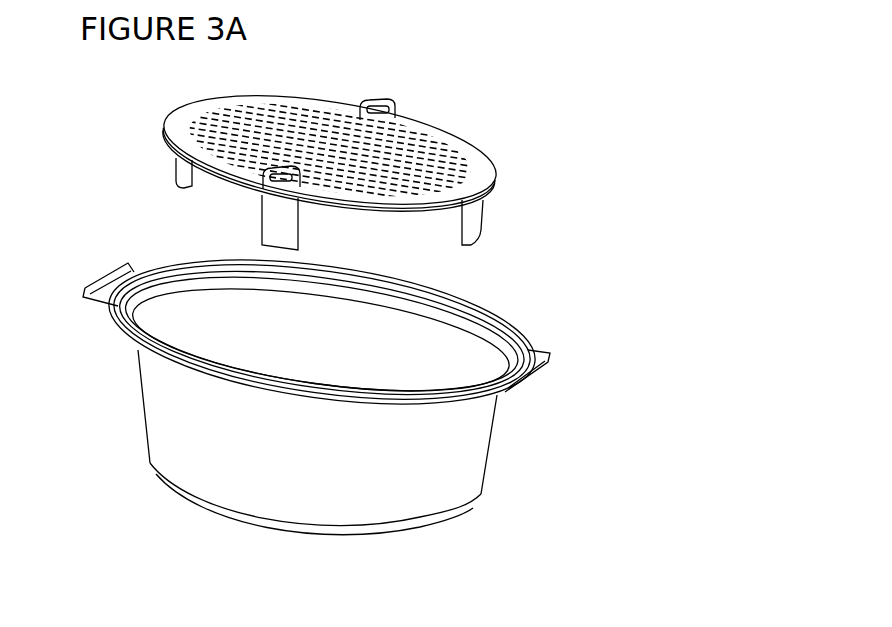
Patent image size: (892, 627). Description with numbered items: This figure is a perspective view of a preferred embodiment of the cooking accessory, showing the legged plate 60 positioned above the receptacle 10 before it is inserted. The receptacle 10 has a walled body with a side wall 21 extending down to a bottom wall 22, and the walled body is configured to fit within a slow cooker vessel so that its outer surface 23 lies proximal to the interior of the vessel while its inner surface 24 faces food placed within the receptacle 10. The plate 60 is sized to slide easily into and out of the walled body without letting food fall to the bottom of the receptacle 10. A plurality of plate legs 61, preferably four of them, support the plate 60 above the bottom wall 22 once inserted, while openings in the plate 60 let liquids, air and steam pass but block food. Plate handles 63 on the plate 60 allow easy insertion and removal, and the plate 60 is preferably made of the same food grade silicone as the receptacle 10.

The receptacle 10 is at (385, 407).
The side wall 21 is at (482, 475).
The bottom wall 22 is at (395, 534).
The outer surface 23 is at (240, 447).
The inner surface 24 is at (190, 327).
The plate 60 is at (187, 125).
The plate legs 61 is at (287, 232).
The plate handles 63 is at (292, 175).